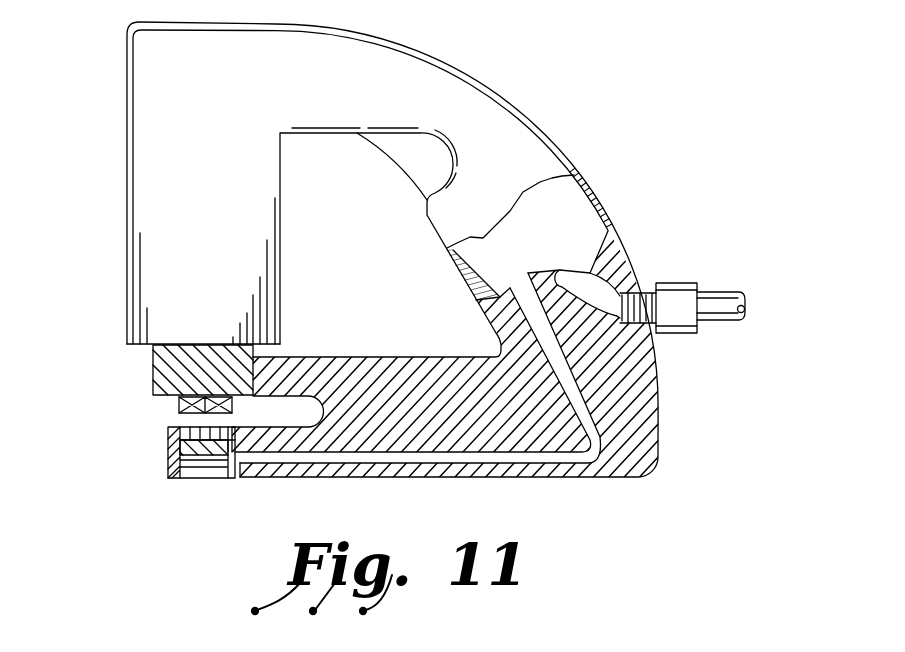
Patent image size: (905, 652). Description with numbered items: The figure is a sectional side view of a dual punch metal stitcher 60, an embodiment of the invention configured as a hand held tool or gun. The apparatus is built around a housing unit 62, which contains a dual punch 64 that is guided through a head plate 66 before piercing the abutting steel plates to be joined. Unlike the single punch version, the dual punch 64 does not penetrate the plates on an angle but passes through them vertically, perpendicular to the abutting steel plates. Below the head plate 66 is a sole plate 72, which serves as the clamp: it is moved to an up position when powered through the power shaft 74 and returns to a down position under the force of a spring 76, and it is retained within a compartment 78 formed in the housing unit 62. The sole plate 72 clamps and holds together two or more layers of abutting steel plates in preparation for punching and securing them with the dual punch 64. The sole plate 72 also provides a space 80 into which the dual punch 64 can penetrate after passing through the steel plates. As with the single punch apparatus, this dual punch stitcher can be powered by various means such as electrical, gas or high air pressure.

The dual punch metal stitcher 60 is at (576, 151).
The housing unit 62 is at (506, 123).
The dual punch 64 is at (180, 420).
The head plate 66 is at (180, 400).
The sole plate 72 is at (168, 462).
The power shaft 74 is at (552, 457).
The spring 76 is at (168, 447).
The compartment 78 is at (168, 440).
The space 80 is at (210, 477).